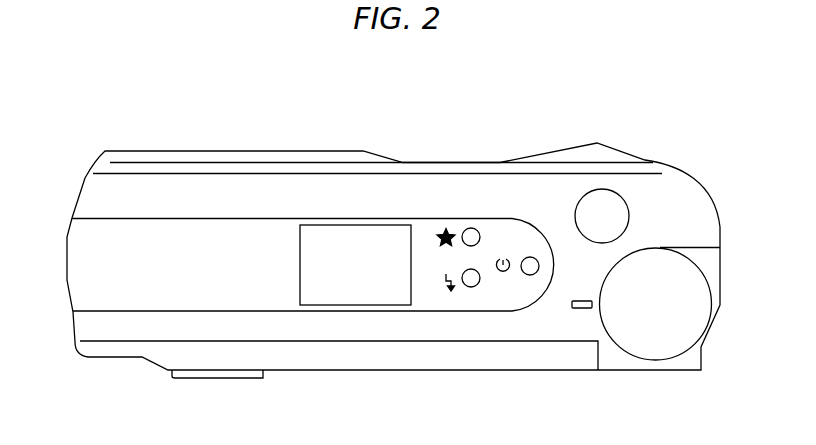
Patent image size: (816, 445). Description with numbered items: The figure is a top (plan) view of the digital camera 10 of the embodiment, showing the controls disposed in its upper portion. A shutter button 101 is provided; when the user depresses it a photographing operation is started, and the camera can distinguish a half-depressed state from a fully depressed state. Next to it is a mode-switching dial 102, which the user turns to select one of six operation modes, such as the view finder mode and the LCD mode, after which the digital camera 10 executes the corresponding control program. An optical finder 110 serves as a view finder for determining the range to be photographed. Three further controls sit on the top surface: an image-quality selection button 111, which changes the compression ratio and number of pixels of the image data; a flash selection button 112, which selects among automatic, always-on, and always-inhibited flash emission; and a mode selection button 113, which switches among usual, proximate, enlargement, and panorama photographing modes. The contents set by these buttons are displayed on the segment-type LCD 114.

The digital camera 10 is at (305, 131).
The shutter button 101 is at (608, 203).
The mode-switching dial 102 is at (683, 330).
The optical finder 110 is at (218, 375).
The image-quality selection button 111 is at (471, 228).
The flash selection button 112 is at (472, 287).
The mode selection button 113 is at (533, 275).
The segment-type LCD 114 is at (357, 287).